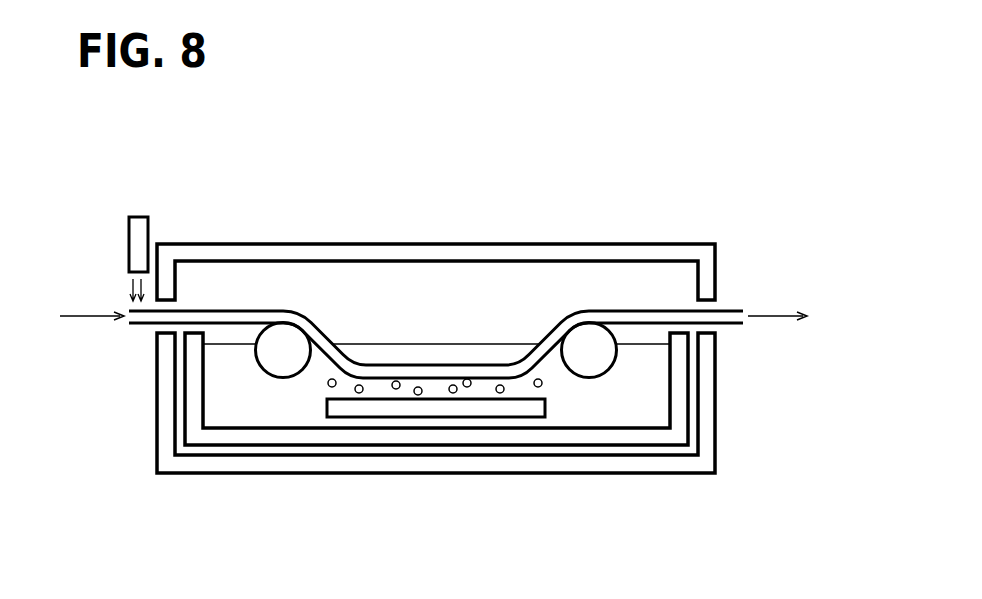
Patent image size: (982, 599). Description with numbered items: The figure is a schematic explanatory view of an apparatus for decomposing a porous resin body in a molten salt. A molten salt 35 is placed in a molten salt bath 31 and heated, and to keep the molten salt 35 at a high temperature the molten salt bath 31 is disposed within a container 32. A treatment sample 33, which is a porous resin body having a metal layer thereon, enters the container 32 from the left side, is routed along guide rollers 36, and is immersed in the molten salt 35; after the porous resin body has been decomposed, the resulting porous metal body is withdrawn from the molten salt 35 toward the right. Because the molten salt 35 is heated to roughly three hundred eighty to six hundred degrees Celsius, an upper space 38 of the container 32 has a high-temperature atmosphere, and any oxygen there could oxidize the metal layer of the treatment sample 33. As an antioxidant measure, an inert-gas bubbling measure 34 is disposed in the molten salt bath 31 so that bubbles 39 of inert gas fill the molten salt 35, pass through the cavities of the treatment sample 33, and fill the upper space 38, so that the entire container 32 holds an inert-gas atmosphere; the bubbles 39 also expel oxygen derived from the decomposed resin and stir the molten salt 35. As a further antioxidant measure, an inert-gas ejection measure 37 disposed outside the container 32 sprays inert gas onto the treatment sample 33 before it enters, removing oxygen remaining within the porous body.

The molten salt bath 31 is at (647, 434).
The container 32 is at (706, 272).
The treatment sample 33 is at (233, 320).
The inert-gas bubbling measure 34 is at (347, 408).
The molten salt 35 is at (228, 397).
The guide rollers 36 is at (283, 350).
The inert-gas ejection measure 37 is at (139, 243).
The upper space 38 is at (526, 269).
The bubbles 39 is at (455, 392).